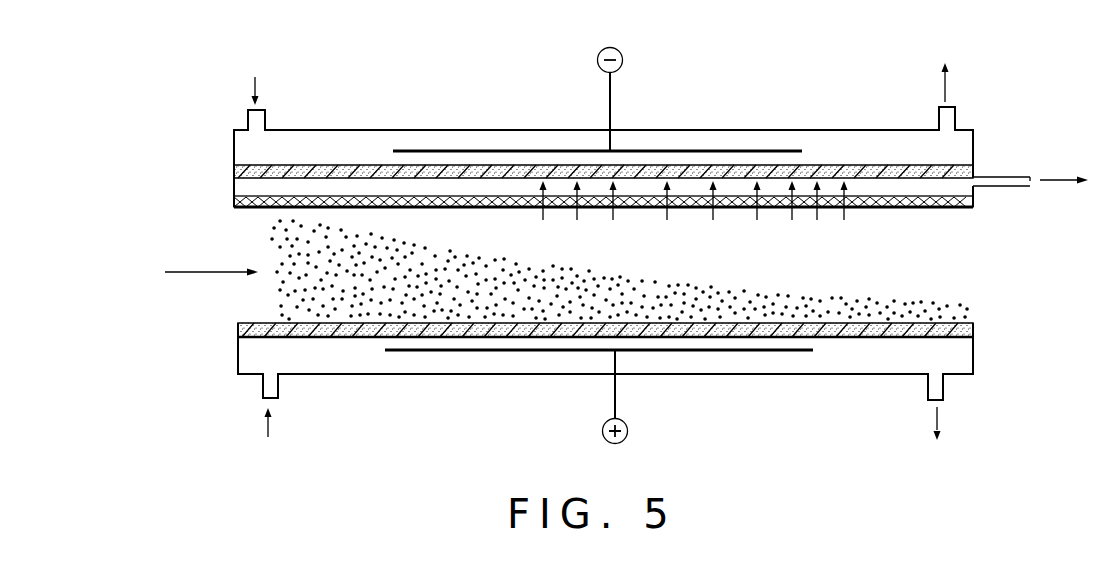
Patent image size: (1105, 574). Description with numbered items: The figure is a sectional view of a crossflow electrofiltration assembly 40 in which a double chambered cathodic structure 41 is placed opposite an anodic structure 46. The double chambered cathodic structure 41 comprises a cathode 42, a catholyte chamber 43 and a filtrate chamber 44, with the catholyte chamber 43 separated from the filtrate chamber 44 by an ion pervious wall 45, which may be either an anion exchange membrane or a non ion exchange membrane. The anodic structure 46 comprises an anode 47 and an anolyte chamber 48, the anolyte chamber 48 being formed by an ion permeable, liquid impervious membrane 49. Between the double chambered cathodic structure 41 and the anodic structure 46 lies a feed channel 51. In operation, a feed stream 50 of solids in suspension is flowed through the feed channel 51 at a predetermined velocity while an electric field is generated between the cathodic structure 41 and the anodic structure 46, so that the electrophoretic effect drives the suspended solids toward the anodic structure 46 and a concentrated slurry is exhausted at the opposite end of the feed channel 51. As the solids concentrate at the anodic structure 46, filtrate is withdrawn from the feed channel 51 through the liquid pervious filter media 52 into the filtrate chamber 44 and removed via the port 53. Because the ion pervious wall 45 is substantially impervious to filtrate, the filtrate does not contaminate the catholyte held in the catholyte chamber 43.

The crossflow electrofiltration assembly 40 is at (622, 141).
The double chambered cathodic structure 41 is at (622, 141).
The cathode 42 is at (612, 101).
The catholyte chamber 43 is at (963, 138).
The filtrate chamber 44 is at (883, 183).
The ion pervious wall 45 is at (967, 168).
The anodic structure 46 is at (238, 357).
The anode 47 is at (611, 391).
The anolyte chamber 48 is at (377, 360).
The ion permeable, liquid impervious membrane 49 is at (238, 332).
The feed stream 50 is at (210, 270).
The feed channel 51 is at (726, 265).
The liquid pervious filter media 52 is at (234, 200).
The port 53 is at (1018, 182).